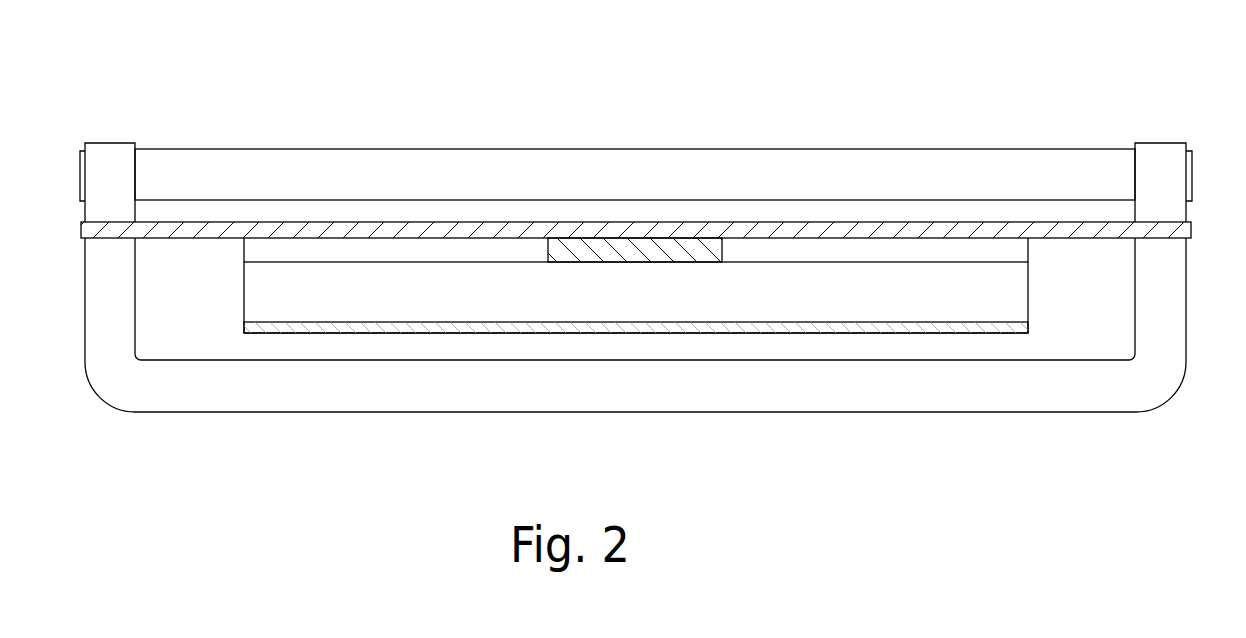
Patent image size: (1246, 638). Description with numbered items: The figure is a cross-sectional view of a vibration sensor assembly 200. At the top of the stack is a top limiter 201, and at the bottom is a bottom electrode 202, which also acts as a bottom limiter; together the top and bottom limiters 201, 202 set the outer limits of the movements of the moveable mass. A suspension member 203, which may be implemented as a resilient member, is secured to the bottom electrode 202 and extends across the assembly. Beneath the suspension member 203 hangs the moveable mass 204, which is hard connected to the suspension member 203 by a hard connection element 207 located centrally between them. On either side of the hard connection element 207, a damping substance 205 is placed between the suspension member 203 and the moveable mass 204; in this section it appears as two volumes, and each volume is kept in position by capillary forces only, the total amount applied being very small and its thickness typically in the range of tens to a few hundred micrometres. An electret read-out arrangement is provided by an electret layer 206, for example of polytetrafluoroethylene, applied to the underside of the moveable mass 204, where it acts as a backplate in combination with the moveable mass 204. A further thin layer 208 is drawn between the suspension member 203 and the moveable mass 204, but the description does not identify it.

The vibration sensor assembly 200 is at (738, 94).
The top limiter 201 is at (407, 158).
The bottom electrode 202 is at (673, 390).
The suspension member 203 is at (484, 232).
The moveable mass 204 is at (378, 300).
The damping substance 205 is at (813, 248).
The electret layer 206 is at (615, 325).
The hard connection element 207 is at (576, 252).
The intermediate layer 208 is at (275, 252).